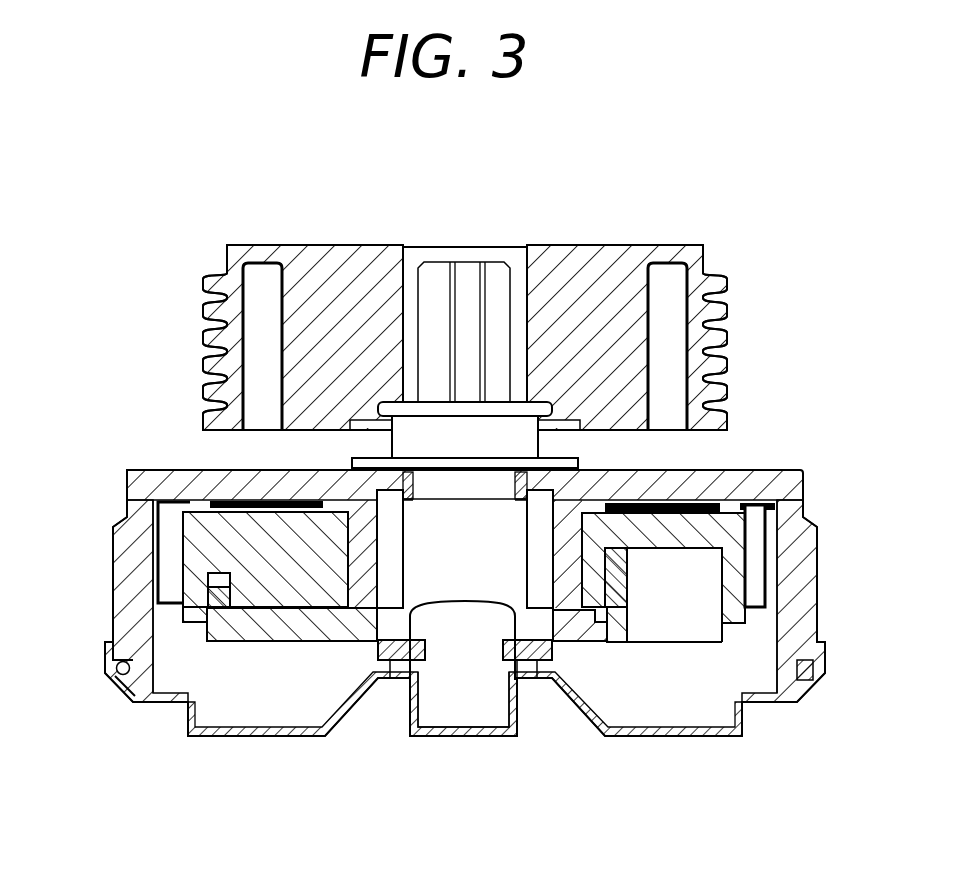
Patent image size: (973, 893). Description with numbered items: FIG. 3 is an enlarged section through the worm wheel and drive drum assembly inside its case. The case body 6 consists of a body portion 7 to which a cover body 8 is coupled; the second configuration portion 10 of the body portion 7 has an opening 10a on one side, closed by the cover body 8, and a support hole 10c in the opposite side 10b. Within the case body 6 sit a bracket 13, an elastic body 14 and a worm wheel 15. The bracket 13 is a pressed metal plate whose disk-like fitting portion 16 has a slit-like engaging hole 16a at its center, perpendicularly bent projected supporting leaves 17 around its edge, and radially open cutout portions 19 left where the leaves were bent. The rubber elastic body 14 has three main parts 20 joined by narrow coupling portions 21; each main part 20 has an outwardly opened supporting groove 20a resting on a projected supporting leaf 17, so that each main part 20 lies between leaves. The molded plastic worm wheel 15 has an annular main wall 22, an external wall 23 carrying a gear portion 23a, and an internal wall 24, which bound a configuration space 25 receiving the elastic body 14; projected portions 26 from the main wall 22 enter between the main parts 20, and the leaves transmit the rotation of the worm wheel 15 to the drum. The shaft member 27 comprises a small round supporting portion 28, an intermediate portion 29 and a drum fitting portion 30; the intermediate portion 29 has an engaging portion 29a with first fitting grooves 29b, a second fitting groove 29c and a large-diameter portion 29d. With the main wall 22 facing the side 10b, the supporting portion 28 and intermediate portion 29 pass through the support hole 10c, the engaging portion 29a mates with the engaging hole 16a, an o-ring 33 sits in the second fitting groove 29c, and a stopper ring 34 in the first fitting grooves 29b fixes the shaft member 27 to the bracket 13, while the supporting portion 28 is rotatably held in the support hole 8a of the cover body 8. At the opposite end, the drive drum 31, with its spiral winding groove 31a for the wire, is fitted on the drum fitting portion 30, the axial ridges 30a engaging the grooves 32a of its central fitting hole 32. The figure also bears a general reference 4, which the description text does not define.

The motor 4 is at (866, 281).
The case body 6 is at (127, 510).
The body portion 7 is at (113, 573).
The cover body 8 is at (262, 734).
The support hole 8a is at (437, 730).
The second configuration portion 10 is at (113, 618).
The opening 10a is at (153, 672).
The side 10b is at (755, 470).
The support hole 10c is at (390, 447).
The bracket 13 is at (255, 603).
The elastic body 14 is at (660, 600).
The worm wheel 15 is at (763, 527).
The fitting portion 16 is at (598, 642).
The engaging hole 16a is at (390, 675).
The projected supporting leaves 17 is at (710, 568).
The cutout portions 19 is at (616, 600).
The main parts 20 is at (640, 560).
The supporting grooves 20a is at (745, 655).
The coupling portions 21 is at (220, 598).
The main wall 22 is at (725, 500).
The external wall 23 is at (780, 600).
The gear portion 23a is at (765, 580).
The internal wall 24 is at (583, 615).
The configuration space 25 is at (770, 680).
The projected portions 26 is at (290, 603).
The shaft member 27 is at (437, 385).
The supporting portion 28 is at (468, 700).
The intermediate portion 29 is at (347, 490).
The engaging portion 29a is at (520, 662).
The first fitting grooves 29b is at (425, 650).
The second fitting groove 29c is at (600, 425).
The large-diameter portion 29d is at (545, 400).
The drum fitting portion 30 is at (505, 300).
The ridges 30a is at (410, 322).
The drive drum 31 is at (243, 248).
The winding groove 31a is at (205, 295).
The fitting hole 32 is at (405, 372).
The grooves 32a is at (463, 287).
The o-ring 33 is at (625, 468).
The stopper ring 34 is at (556, 688).